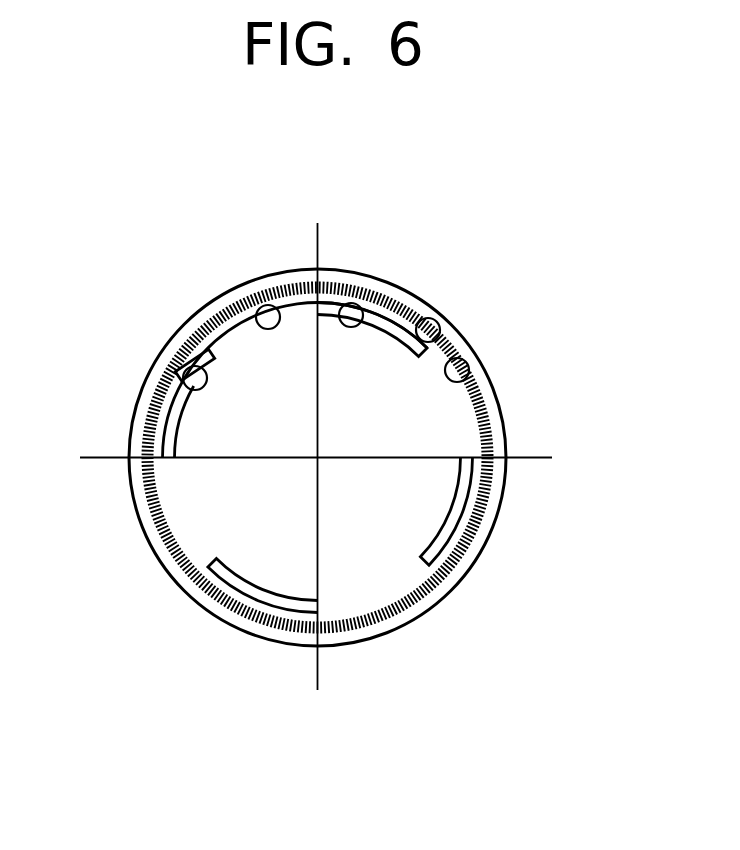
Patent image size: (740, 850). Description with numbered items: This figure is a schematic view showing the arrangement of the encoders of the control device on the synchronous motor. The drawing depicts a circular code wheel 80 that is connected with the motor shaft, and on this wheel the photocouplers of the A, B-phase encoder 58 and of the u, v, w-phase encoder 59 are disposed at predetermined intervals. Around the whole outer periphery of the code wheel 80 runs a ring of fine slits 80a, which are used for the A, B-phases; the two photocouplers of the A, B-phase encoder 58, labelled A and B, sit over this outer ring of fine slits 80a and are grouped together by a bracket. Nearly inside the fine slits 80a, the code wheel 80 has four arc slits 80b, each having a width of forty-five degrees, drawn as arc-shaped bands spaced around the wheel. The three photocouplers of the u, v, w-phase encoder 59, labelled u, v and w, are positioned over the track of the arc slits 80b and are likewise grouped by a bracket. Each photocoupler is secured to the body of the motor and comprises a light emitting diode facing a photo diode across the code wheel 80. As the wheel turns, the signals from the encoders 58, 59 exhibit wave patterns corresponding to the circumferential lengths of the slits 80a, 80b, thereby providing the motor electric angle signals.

The code wheel 80 is at (133, 410).
The fine slits 80a is at (483, 424).
The arc slits 80b is at (460, 523).
The u, v, w-phase encoder 59 is at (359, 162).
The A, B-phase encoder 58 is at (571, 293).
The u-phase u is at (351, 302).
The v-phase v is at (266, 304).
The w-phase w is at (181, 362).
The A-phase A is at (460, 358).
The B-phase B is at (432, 318).